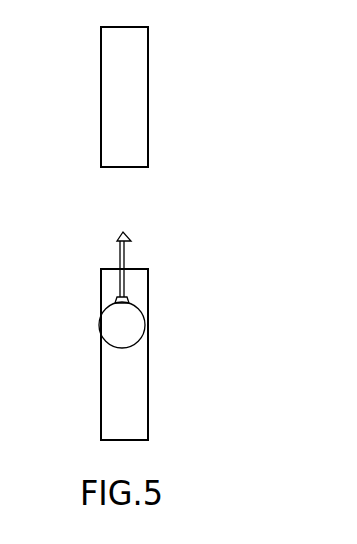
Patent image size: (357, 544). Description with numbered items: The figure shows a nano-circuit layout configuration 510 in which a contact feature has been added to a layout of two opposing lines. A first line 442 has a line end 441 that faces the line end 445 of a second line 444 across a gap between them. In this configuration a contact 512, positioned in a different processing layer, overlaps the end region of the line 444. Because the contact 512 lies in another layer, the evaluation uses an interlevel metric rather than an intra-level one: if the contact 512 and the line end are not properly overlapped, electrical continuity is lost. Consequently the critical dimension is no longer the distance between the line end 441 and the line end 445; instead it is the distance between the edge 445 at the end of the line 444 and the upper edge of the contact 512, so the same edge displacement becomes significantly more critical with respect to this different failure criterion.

The configuration 510 is at (225, 108).
The line 442 is at (101, 93).
The line end 441 is at (135, 167).
The line 444 is at (101, 390).
The line end 445 is at (128, 268).
The contact 512 is at (140, 319).